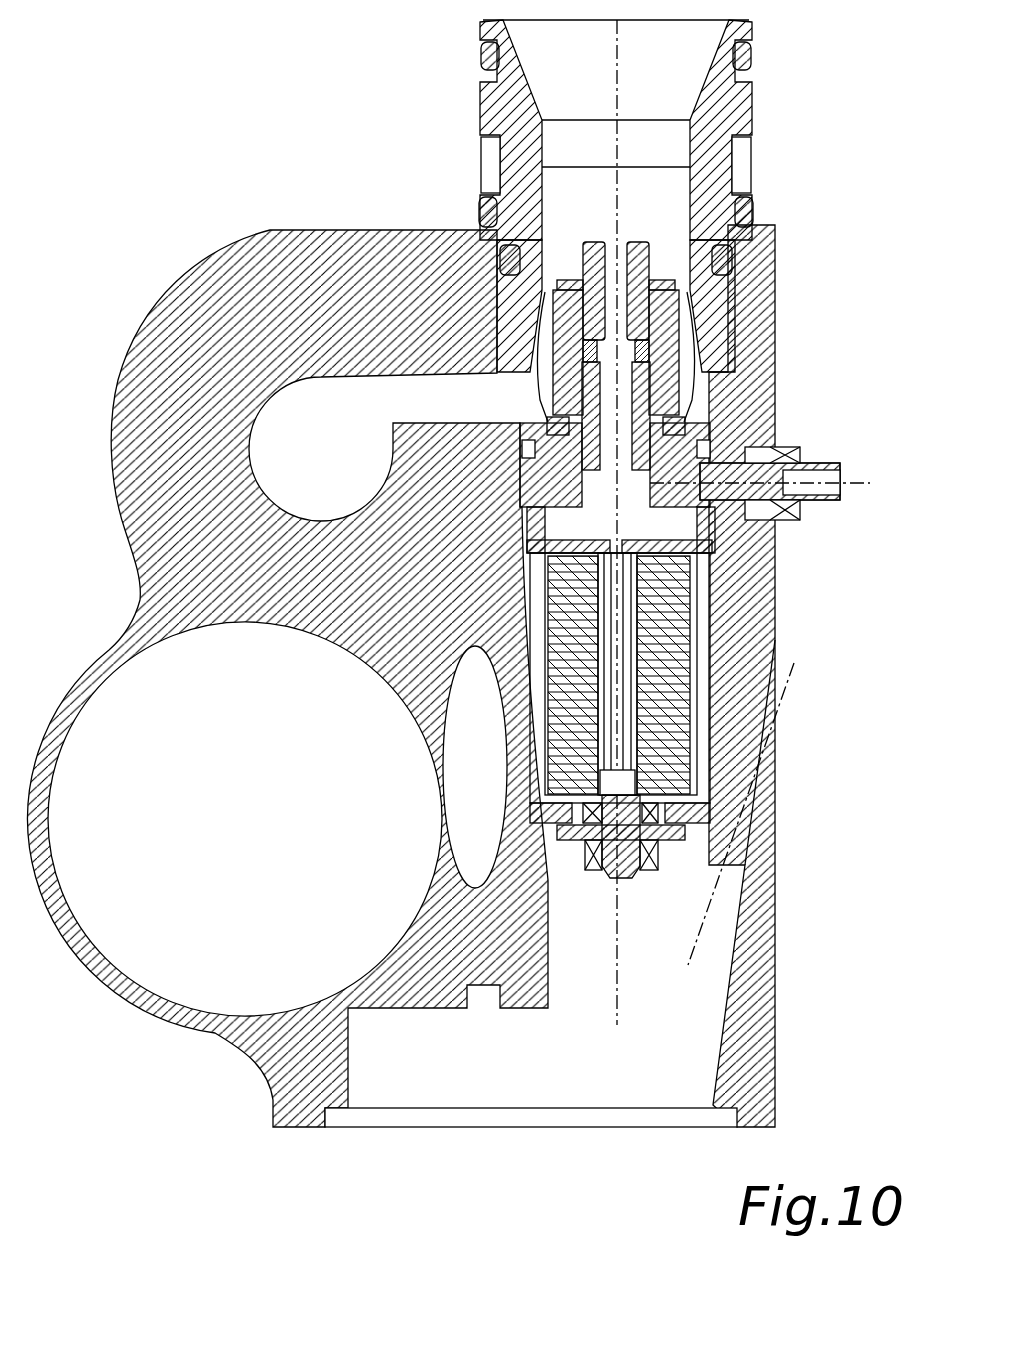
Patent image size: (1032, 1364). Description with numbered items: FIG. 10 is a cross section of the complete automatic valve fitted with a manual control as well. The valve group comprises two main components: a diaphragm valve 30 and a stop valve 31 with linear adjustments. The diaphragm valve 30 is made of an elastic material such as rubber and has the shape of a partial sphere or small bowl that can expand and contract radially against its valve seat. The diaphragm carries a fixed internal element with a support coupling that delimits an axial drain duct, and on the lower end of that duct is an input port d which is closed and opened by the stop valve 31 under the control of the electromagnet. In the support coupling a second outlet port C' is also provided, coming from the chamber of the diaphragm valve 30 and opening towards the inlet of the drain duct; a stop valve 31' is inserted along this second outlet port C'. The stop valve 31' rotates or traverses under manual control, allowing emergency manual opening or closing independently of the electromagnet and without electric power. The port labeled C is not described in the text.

The valve chamber C is at (516, 293).
The diaphragm valve 30 is at (678, 318).
The stop valve 31' is at (760, 454).
The second outlet port C' is at (740, 503).
The input port d is at (637, 543).
The stop valve 31 is at (697, 675).